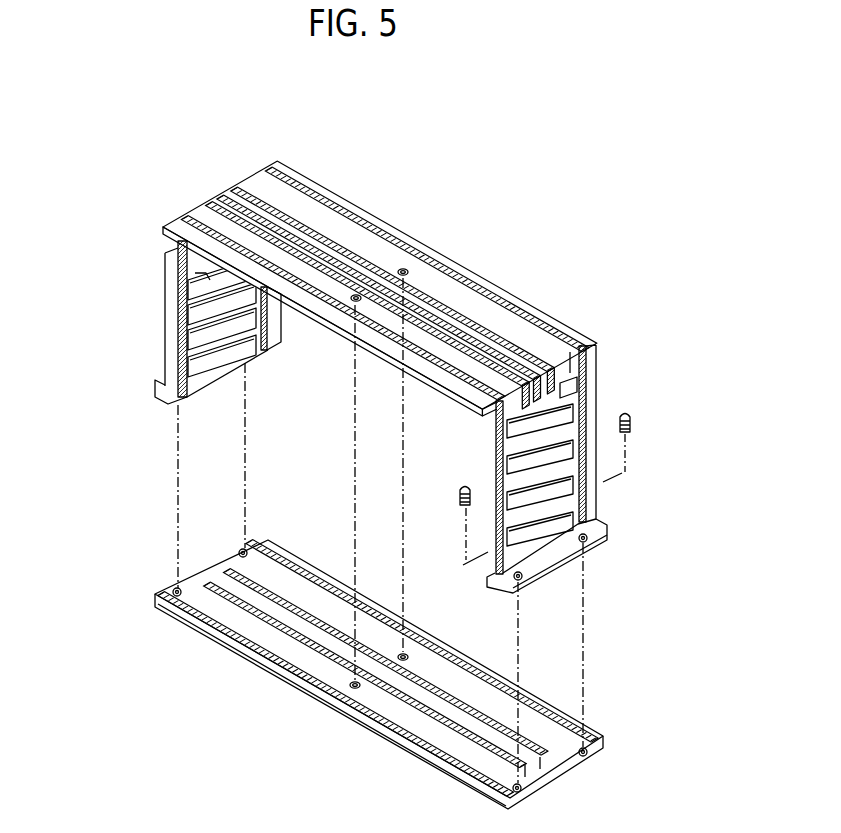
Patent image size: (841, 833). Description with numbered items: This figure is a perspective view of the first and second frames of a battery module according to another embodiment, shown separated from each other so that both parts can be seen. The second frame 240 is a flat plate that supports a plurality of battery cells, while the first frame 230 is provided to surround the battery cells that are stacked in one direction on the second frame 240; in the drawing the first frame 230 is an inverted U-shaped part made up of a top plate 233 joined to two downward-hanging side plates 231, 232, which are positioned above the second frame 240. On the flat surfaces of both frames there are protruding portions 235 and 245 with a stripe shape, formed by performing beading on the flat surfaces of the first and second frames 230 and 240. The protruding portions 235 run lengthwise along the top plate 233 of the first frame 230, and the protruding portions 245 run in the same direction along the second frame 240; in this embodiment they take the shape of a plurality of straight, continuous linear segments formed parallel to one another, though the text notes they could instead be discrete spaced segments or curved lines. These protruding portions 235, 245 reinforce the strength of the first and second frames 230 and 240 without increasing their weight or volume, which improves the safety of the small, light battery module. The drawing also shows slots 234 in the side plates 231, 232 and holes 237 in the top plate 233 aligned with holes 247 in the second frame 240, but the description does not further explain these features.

The first frame 230 is at (371, 120).
The left side plate 231 is at (337, 222).
The right side plate 232 is at (568, 345).
The top plate 233 is at (253, 198).
The slot 234 is at (177, 266).
The protruding portion 235 is at (261, 164).
The hole 237 is at (397, 273).
The second frame 240 is at (354, 731).
The protruding portion 245 is at (485, 757).
The hole 247 is at (398, 657).